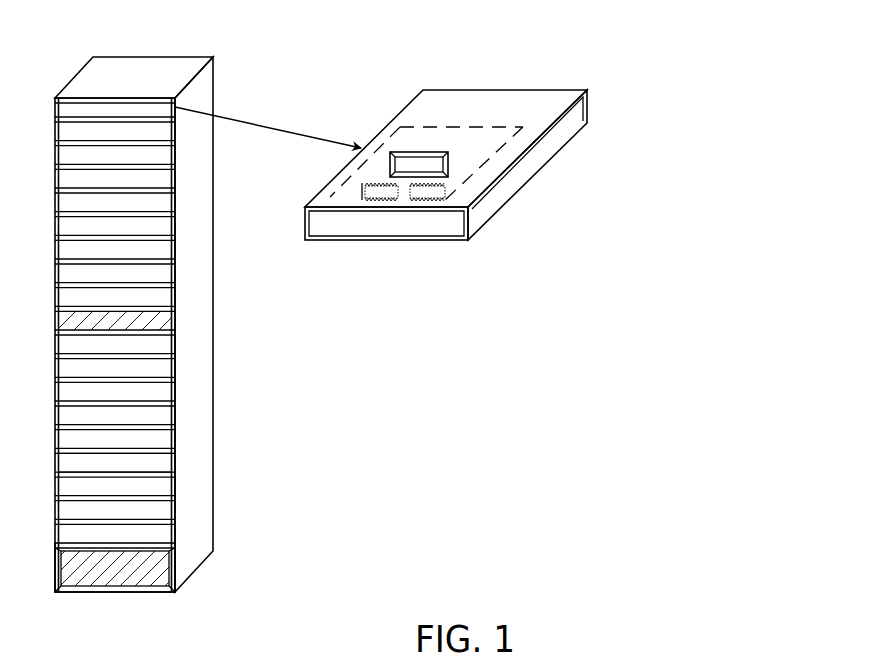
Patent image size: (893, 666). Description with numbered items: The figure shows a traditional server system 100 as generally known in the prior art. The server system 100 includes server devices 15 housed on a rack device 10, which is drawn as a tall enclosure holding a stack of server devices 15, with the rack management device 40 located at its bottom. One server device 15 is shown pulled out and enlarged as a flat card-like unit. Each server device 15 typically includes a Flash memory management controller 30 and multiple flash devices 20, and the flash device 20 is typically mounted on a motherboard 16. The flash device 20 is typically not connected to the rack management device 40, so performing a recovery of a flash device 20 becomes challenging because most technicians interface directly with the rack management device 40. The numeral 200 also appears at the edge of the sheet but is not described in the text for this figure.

The rack device 10 is at (213, 78).
The server device 15 is at (165, 460).
The motherboard 16 is at (437, 137).
The flash device 20 is at (437, 192).
The Flash memory management controller 30 is at (430, 166).
The rack management device 40 is at (160, 563).
The server system 100 is at (692, 55).
The reference 200 is at (788, 665).